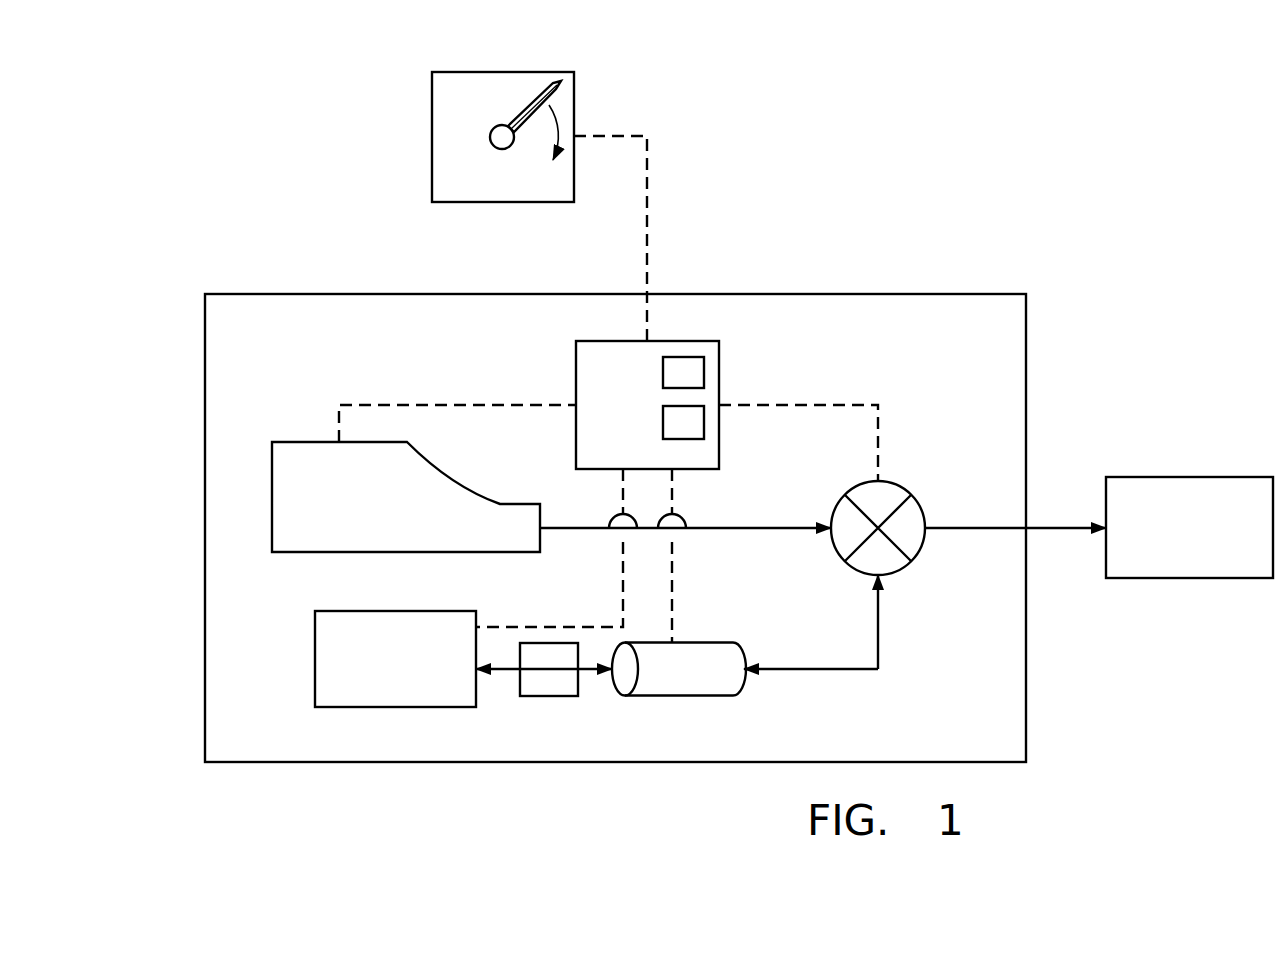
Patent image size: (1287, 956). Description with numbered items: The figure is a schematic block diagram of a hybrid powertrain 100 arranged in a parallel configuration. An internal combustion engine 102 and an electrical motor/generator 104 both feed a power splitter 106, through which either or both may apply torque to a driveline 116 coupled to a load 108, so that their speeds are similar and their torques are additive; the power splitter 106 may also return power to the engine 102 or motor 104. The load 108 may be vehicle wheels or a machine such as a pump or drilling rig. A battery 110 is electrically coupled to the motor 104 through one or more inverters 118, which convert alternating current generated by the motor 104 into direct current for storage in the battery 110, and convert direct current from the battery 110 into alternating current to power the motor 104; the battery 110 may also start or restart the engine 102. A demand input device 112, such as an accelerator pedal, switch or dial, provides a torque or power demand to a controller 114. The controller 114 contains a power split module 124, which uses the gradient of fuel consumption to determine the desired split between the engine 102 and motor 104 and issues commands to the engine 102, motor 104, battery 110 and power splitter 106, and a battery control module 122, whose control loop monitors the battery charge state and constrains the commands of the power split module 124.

The hybrid powertrain 100 is at (1007, 170).
The internal combustion engine 102 is at (272, 495).
The electrical motor/generator 104 is at (678, 698).
The power splitter 106 is at (910, 493).
The load 108 is at (1190, 477).
The battery 110 is at (396, 707).
The demand input device 112 is at (505, 72).
The controller 114 is at (605, 341).
The driveline 116 is at (1049, 528).
The inverter 118 is at (549, 696).
The battery control module 122 is at (705, 420).
The power split module 124 is at (683, 357).